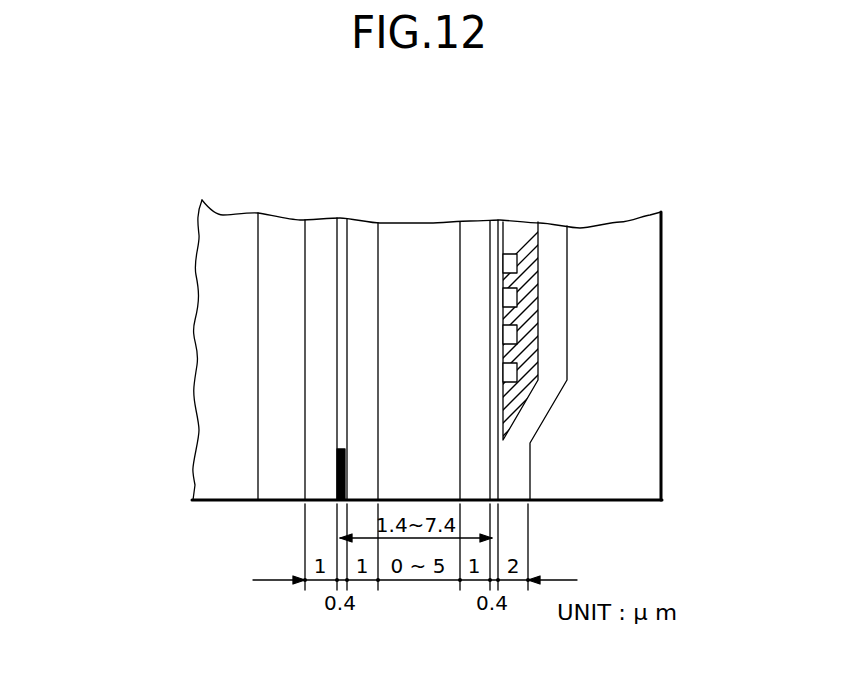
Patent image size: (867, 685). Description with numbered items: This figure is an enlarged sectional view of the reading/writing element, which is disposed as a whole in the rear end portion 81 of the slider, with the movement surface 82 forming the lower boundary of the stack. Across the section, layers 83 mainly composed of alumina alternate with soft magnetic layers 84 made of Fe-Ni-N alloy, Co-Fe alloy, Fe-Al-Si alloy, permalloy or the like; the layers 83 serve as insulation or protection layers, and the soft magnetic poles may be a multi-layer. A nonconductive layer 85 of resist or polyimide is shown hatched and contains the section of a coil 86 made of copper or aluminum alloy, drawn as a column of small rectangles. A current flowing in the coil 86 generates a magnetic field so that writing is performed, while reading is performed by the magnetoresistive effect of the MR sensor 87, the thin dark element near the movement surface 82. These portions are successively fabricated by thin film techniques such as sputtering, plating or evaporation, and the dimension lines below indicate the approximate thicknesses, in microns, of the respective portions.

The rear end portion of the slider 81 is at (208, 435).
The movement surface 82 is at (206, 501).
The layers mainly composed of Al2O3 83 is at (282, 232).
The soft magnetic layer 84 is at (322, 230).
The nonconductive layer 85 is at (515, 245).
The section of a coil 86 is at (509, 253).
The MR reproducing or reading sensor 87 is at (336, 458).